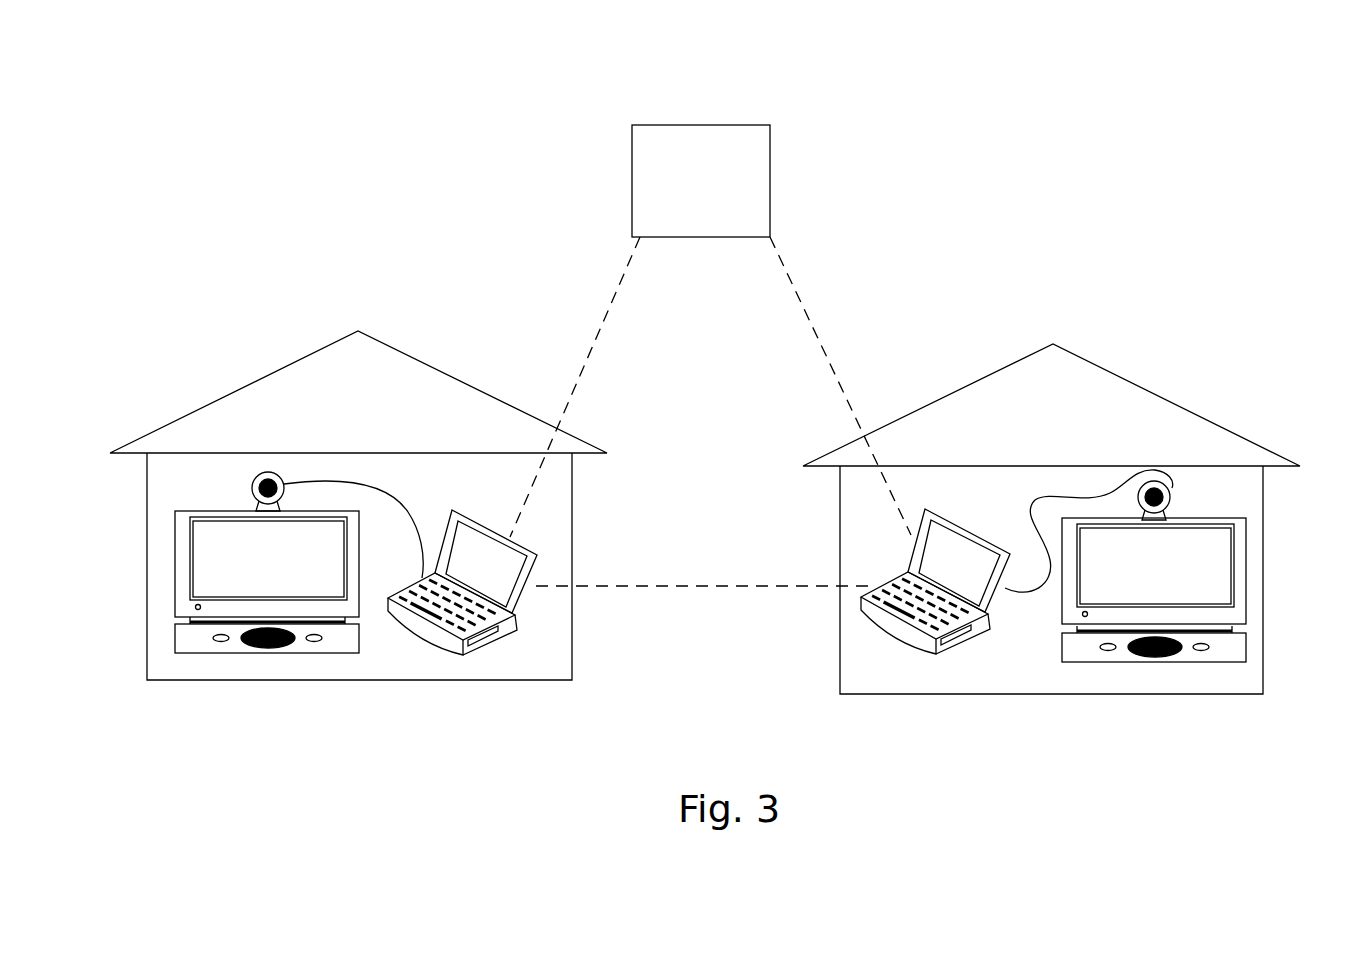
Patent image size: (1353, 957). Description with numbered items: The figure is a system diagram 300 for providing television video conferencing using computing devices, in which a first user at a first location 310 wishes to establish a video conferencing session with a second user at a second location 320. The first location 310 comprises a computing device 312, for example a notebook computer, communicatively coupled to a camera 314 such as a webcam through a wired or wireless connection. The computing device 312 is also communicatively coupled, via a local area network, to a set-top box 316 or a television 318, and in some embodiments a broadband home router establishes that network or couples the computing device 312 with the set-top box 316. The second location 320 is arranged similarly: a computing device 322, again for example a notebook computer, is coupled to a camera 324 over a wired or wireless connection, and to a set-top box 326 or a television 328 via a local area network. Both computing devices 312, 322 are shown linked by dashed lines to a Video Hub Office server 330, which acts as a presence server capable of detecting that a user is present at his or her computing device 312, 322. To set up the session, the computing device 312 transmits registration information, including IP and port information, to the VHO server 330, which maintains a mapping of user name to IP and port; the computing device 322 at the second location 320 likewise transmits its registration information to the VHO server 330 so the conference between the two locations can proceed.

The system diagram 300 is at (1021, 85).
The first location 310 is at (410, 355).
The computing device 312 is at (453, 510).
The camera 314 is at (280, 476).
The set-top box 316 is at (175, 638).
The television 318 is at (175, 546).
The second location 320 is at (1127, 381).
The computing device 322 is at (952, 527).
The camera 324 is at (1172, 490).
The set-top box 326 is at (1245, 645).
The television 328 is at (1245, 568).
The VHO server 330 is at (682, 209).